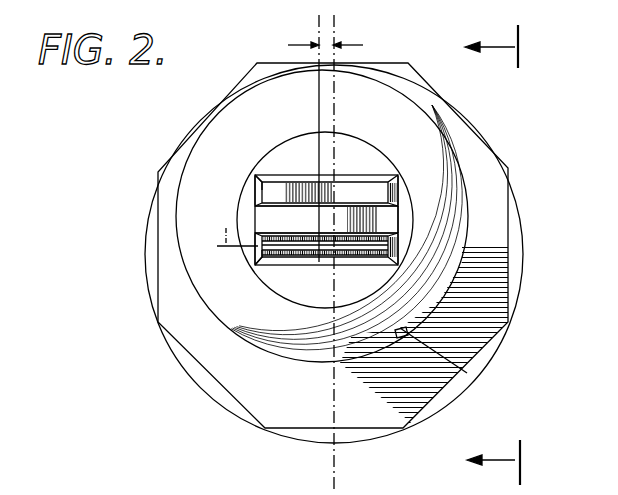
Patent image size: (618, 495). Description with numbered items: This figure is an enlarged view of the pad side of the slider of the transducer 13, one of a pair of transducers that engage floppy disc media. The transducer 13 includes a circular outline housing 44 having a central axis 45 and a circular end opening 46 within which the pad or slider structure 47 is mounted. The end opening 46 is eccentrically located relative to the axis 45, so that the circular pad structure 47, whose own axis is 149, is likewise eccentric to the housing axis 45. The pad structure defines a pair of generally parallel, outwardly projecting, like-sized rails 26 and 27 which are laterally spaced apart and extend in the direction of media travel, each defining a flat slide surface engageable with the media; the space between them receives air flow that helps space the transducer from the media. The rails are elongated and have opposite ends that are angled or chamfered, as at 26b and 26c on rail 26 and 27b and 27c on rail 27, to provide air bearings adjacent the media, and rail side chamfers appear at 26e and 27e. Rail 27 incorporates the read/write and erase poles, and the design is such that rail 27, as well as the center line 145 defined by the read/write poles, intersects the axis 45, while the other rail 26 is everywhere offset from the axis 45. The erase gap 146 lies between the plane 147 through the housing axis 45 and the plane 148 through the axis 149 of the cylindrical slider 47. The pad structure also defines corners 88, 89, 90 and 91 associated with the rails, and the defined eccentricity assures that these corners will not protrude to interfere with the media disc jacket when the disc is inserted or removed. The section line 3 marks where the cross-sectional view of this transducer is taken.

The section line 3- 3 is at (476, 252).
The transducer 13 is at (152, 346).
The lower rail 26 is at (328, 154).
The angled end of rail 26 26b is at (392, 200).
The angled end of rail 26 26c is at (258, 193).
The rail side chamfer 26e is at (344, 180).
The lower rail 27 is at (338, 305).
The angled end of rail 27 27b is at (393, 247).
The angled end of rail 27 27c is at (262, 250).
The rail side chamfer 27e is at (300, 263).
The housing 44 is at (522, 332).
The central axis 45 is at (401, 218).
The circular end opening 46 is at (467, 373).
The pad or slider structure 47 is at (383, 168).
The corner of pad structure 88 is at (462, 270).
The corner of pad structure 89 is at (397, 195).
The corner of pad structure 90 is at (256, 178).
The corner of pad structure 91 is at (262, 265).
The center line of read/write poles 145 is at (227, 227).
The erase gap 146 is at (344, 47).
The plane through axis 45 147 is at (333, 30).
The plane through axis 149 148 is at (318, 27).
The axis of cylindrical slider 149 is at (323, 219).